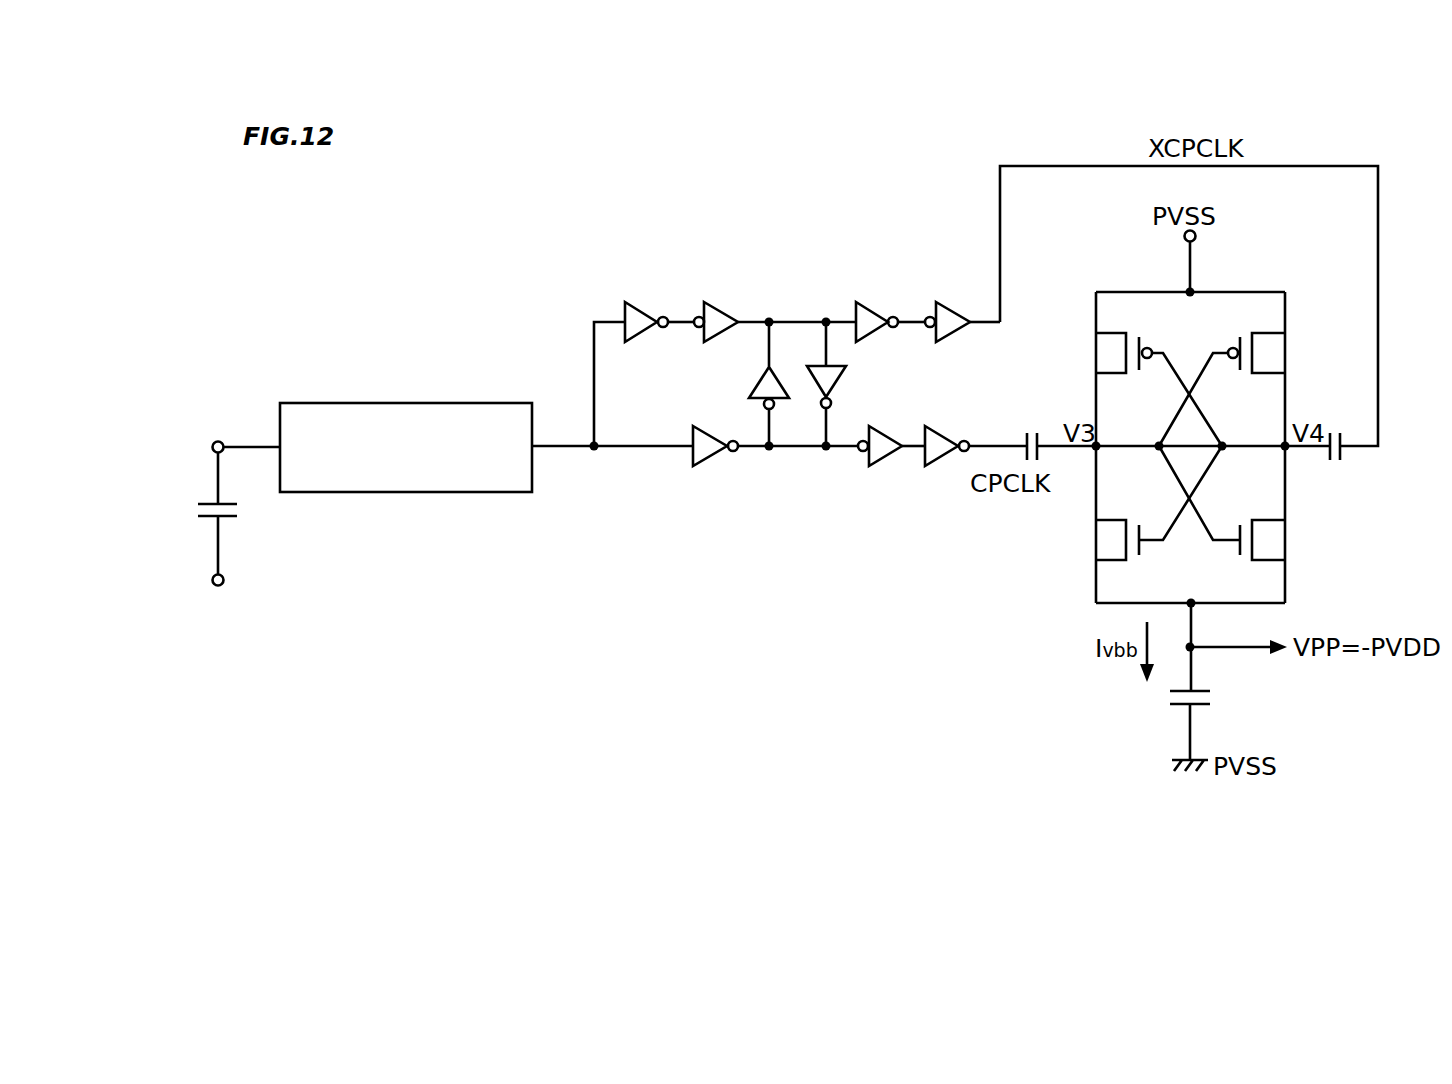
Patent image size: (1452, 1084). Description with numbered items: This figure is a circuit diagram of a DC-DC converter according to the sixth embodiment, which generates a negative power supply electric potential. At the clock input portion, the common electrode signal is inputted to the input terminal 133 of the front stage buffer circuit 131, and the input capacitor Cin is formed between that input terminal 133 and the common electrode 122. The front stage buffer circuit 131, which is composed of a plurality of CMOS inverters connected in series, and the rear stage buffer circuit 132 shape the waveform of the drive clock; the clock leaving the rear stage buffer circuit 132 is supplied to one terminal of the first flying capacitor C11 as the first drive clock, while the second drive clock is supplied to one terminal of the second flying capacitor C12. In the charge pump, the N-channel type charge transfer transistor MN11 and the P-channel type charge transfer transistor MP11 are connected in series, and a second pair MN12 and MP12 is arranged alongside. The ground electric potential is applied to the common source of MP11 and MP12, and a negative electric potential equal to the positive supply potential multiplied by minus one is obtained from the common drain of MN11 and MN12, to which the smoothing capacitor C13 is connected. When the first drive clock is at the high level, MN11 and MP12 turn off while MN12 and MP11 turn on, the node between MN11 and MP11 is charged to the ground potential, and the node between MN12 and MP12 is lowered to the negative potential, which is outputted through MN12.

The front stage buffer circuit 131 is at (455, 403).
The rear stage buffer circuit 132 is at (957, 502).
The input terminal 133 is at (212, 447).
The common electrode 122 is at (212, 580).
The input capacitor Cin is at (238, 507).
The first flying capacitor C11 is at (1030, 426).
The second flying capacitor C12 is at (1334, 426).
The smoothing capacitor C13 is at (1218, 699).
The P-channel type charge transfer transistor MP11 is at (1092, 352).
The P-channel type charge transfer transistor MP12 is at (1287, 352).
The N-channel type charge transfer transistor MN11 is at (1092, 540).
The N-channel type charge transfer transistor MN12 is at (1287, 540).